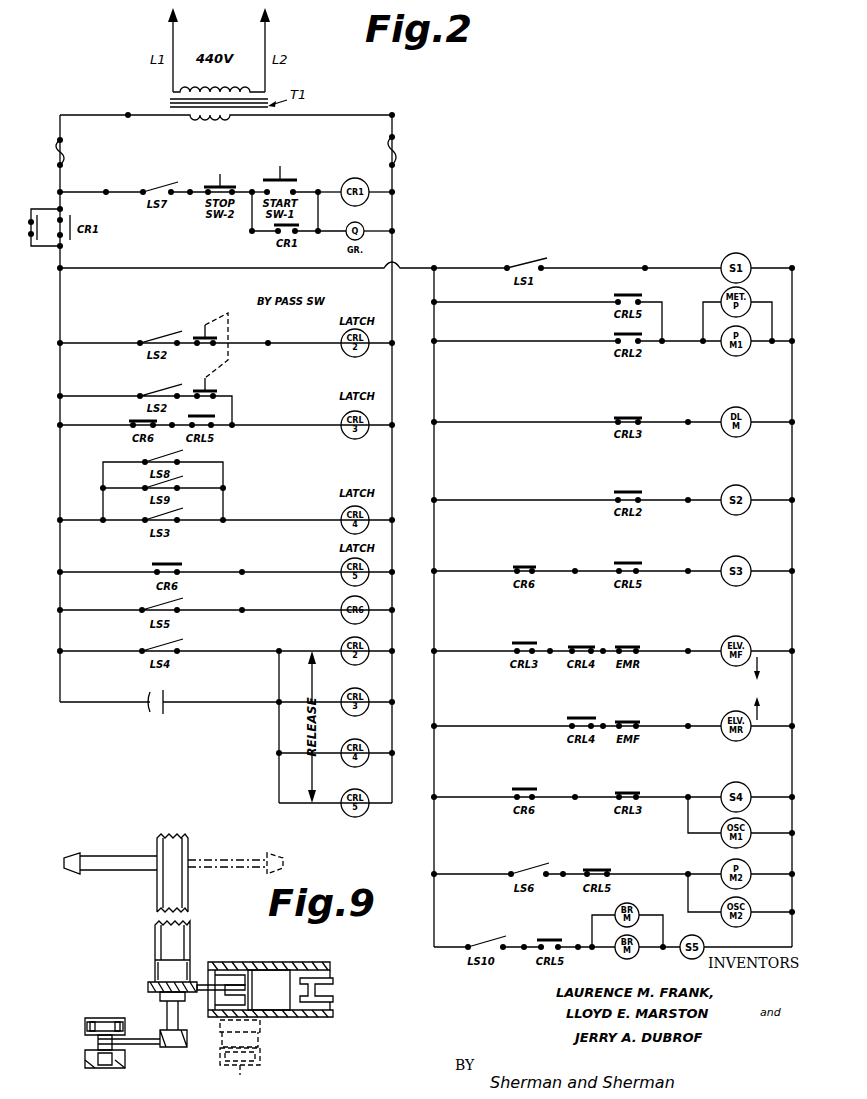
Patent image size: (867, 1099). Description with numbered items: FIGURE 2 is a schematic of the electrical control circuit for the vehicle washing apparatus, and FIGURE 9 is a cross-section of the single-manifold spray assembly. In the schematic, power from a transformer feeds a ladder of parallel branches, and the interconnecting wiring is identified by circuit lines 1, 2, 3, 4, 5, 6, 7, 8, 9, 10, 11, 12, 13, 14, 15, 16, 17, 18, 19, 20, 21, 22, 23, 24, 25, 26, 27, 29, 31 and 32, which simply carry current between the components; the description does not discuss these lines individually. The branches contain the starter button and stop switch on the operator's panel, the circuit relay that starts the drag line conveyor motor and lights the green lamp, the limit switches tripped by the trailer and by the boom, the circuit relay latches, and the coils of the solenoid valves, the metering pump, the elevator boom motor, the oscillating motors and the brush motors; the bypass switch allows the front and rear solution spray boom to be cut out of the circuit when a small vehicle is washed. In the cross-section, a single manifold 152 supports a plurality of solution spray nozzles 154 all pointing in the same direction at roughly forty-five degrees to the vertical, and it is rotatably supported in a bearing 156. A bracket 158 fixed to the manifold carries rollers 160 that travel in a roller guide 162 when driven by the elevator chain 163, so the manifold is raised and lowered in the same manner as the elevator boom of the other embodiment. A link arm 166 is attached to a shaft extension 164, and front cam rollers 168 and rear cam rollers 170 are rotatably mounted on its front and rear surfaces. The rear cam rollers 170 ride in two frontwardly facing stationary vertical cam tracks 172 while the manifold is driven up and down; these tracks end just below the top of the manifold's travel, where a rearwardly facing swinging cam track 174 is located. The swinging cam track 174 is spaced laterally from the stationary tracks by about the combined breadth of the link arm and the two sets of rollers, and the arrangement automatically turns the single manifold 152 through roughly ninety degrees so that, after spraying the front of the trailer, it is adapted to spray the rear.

In FIG. 2, the circuit conductor 1 is at (190, 192).
In FIG. 2, the circuit conductor 2 is at (392, 115).
In FIG. 2, the circuit conductor 3 is at (252, 192).
In FIG. 2, the circuit conductor 4 is at (318, 192).
In FIG. 2, the circuit conductor 5 is at (60, 268).
In FIG. 2, the circuit conductor 6 is at (268, 343).
In FIG. 2, the circuit conductor 7 is at (172, 425).
In FIG. 2, the circuit conductor 8 is at (232, 425).
In FIG. 2, the circuit conductor 9 is at (223, 520).
In FIG. 2, the circuit conductor 10 is at (250, 562).
In FIG. 2, the conductor 11 is at (283, 643).
In FIG. 2, the conductor 12 is at (654, 259).
In FIG. 2, the conductor 13 is at (662, 341).
In FIG. 2, the supply conductor 14 is at (66, 188).
In FIG. 2, the conductor 15 is at (695, 413).
In FIG. 2, the conductor 16 is at (695, 491).
In FIG. 2, the conductor 17 is at (582, 562).
In FIG. 2, the conductor 18 is at (696, 562).
In FIG. 2, the conductor 19 is at (557, 642).
In FIG. 2, the conductor 20 is at (611, 642).
In FIG. 2, the conductor 21 is at (688, 651).
In FIG. 2, the conductor 22 is at (612, 717).
In FIG. 2, the conductor 23 is at (694, 717).
In FIG. 2, the conductor 24 is at (584, 788).
In FIG. 2, the conductor 25 is at (695, 787).
In FIG. 2, the conductor 26 is at (572, 865).
In FIG. 2, the conductor 27 is at (133, 105).
In FIG. 2, the conductor 29 is at (106, 192).
In FIG. 2, the conductor 31 is at (524, 947).
In FIG. 2, the conductor 32 is at (688, 874).
In FIG. 9, the single manifold 152 is at (163, 889).
In FIG. 9, the solution spray nozzles 154 is at (124, 838).
In FIG. 9, the bearing 156 is at (158, 967).
In FIG. 9, the bracket 158 is at (212, 992).
In FIG. 9, the rollers 160 is at (250, 966).
In FIG. 9, the roller guide 162 is at (269, 990).
In FIG. 9, the elevator chain 163 is at (318, 984).
In FIG. 9, the shaft extension 164 is at (167, 1018).
In FIG. 9, the link arm 166 is at (148, 1046).
In FIG. 9, the front cam rollers 168 is at (95, 1066).
In FIG. 9, the rear cam rollers 170 is at (105, 1025).
In FIG. 9, the stationary vertical cam tracks 172 is at (85, 1027).
In FIG. 9, the swinging cam track 174 is at (85, 1058).